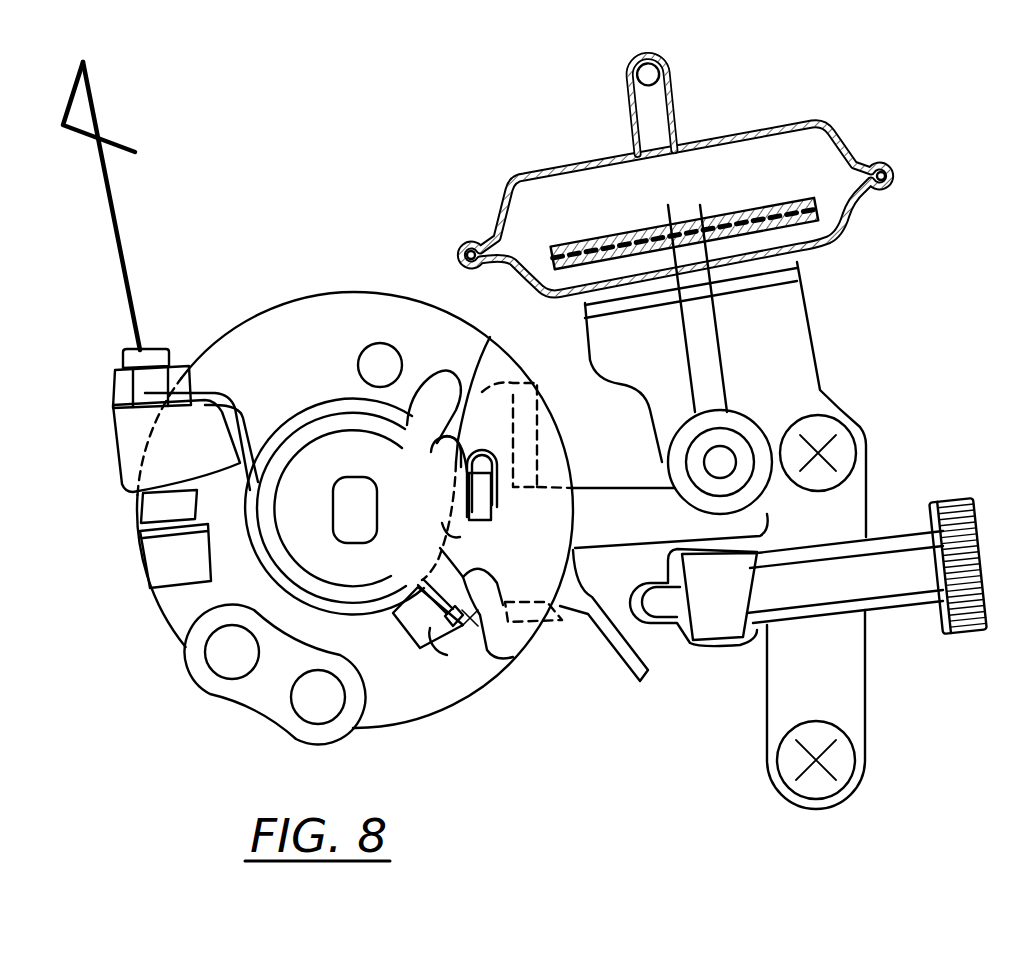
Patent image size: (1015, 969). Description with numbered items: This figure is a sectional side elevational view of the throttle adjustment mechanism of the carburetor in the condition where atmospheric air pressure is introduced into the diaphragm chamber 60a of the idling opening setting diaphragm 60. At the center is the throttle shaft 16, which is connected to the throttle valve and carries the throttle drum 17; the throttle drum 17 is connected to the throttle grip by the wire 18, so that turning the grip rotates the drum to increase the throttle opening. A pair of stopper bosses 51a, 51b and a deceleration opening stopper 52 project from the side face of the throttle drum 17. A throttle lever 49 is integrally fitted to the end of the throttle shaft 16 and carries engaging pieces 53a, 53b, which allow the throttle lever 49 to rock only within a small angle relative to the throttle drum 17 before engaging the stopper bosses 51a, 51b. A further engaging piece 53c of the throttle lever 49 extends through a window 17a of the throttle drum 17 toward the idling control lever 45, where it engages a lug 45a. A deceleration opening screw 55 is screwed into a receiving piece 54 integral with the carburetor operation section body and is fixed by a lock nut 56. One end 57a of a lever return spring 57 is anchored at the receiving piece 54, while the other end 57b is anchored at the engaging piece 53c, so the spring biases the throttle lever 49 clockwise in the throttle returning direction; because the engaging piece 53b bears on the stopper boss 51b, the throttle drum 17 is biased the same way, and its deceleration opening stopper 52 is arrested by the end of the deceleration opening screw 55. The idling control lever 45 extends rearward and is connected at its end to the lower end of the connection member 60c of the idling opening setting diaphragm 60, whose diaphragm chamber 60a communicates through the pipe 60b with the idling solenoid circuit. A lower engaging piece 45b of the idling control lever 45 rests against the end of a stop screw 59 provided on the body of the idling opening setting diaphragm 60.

The wire 18 is at (118, 220).
The deceleration opening screw 55 is at (150, 345).
The lock nut 56 is at (113, 392).
The receiving piece 54 is at (118, 475).
The deceleration opening stopper 52 is at (160, 572).
The throttle drum 17 is at (308, 290).
The window 17a is at (490, 337).
The stopper boss 51a is at (378, 343).
The stopper boss 51b is at (440, 657).
The throttle shaft 16 is at (370, 498).
The lever return spring 57 is at (314, 416).
The one end of lever return spring 57a is at (215, 391).
The other end of lever return spring 57b is at (500, 492).
The engaging piece 53a is at (437, 365).
The engaging piece 53b is at (513, 657).
The engaging piece 53c is at (447, 530).
The throttle lever 49 is at (377, 580).
The idling control lever 45 is at (617, 506).
The lug 45a is at (540, 398).
The lower engaging piece 45b is at (622, 668).
The stop screw 59 is at (666, 600).
The idling opening setting diaphragm 60 is at (782, 124).
The diaphragm chamber 60a is at (749, 189).
The pipe 60b is at (668, 88).
The connection member 60c is at (700, 338).